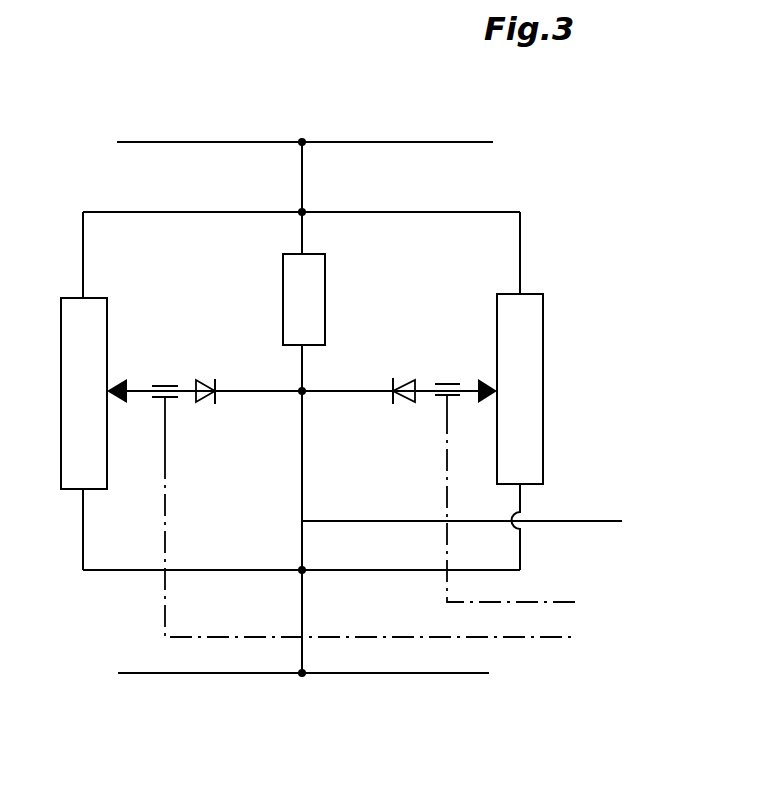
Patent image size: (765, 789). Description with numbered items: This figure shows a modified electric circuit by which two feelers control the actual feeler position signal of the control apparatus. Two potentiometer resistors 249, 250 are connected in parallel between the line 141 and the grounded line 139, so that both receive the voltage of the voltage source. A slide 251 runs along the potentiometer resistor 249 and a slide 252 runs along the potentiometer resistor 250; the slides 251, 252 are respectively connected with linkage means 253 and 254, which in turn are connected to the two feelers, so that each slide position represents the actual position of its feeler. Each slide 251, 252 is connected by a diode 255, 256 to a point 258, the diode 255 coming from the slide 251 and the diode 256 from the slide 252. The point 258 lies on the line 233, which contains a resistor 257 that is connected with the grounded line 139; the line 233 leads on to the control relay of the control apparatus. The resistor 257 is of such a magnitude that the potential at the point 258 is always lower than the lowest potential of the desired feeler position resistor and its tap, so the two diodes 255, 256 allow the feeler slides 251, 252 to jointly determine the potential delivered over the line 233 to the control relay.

The grounded line 139 is at (218, 141).
The line 141 is at (202, 675).
The potentiometer resistor 249 is at (71, 434).
The potentiometer resistor 250 is at (530, 438).
The slide 251 is at (119, 385).
The slide 252 is at (487, 382).
The linkage means 253 is at (506, 626).
The linkage means 254 is at (513, 601).
The diode 255 is at (203, 407).
The diode 256 is at (404, 405).
The resistor 257 is at (298, 305).
The point 258 is at (305, 391).
The line 233 is at (576, 519).